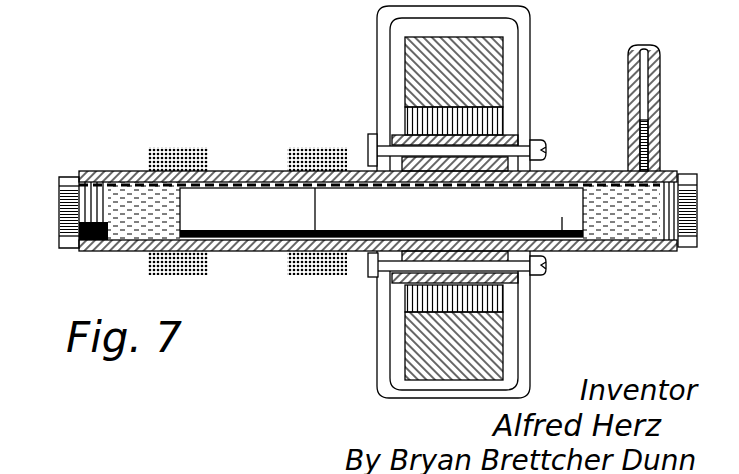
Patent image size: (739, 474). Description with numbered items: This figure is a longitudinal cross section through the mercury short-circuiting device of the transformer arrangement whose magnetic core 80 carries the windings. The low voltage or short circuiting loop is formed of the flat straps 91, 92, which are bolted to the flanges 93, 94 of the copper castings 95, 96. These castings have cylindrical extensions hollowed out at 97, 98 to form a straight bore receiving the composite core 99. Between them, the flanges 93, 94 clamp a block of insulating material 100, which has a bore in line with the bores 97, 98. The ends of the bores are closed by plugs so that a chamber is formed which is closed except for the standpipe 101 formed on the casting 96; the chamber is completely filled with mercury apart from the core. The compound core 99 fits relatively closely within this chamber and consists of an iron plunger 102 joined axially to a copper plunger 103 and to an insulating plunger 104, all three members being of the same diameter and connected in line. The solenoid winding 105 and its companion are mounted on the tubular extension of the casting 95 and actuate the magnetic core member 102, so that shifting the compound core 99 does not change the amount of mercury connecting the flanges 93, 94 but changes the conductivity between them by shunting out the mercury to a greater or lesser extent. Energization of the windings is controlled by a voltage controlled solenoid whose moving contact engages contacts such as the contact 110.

The magnetic core 80 is at (482, 58).
The flat strap 91 is at (522, 12).
The flat strap 92 is at (527, 361).
The flange 93 is at (370, 140).
The flange 94 is at (512, 137).
The copper casting 95 is at (239, 171).
The copper casting 96 is at (563, 171).
The bore 97 is at (99, 252).
The bore 98 is at (690, 174).
The composite core 99 is at (220, 228).
The block of insulating material 100 is at (312, 147).
The standpipe 101 is at (656, 83).
The iron plunger 102 is at (273, 228).
The copper plunger 103 is at (306, 261).
The insulating plunger 104 is at (562, 237).
The solenoid winding 105 is at (177, 147).
The contact 110 is at (166, 6).